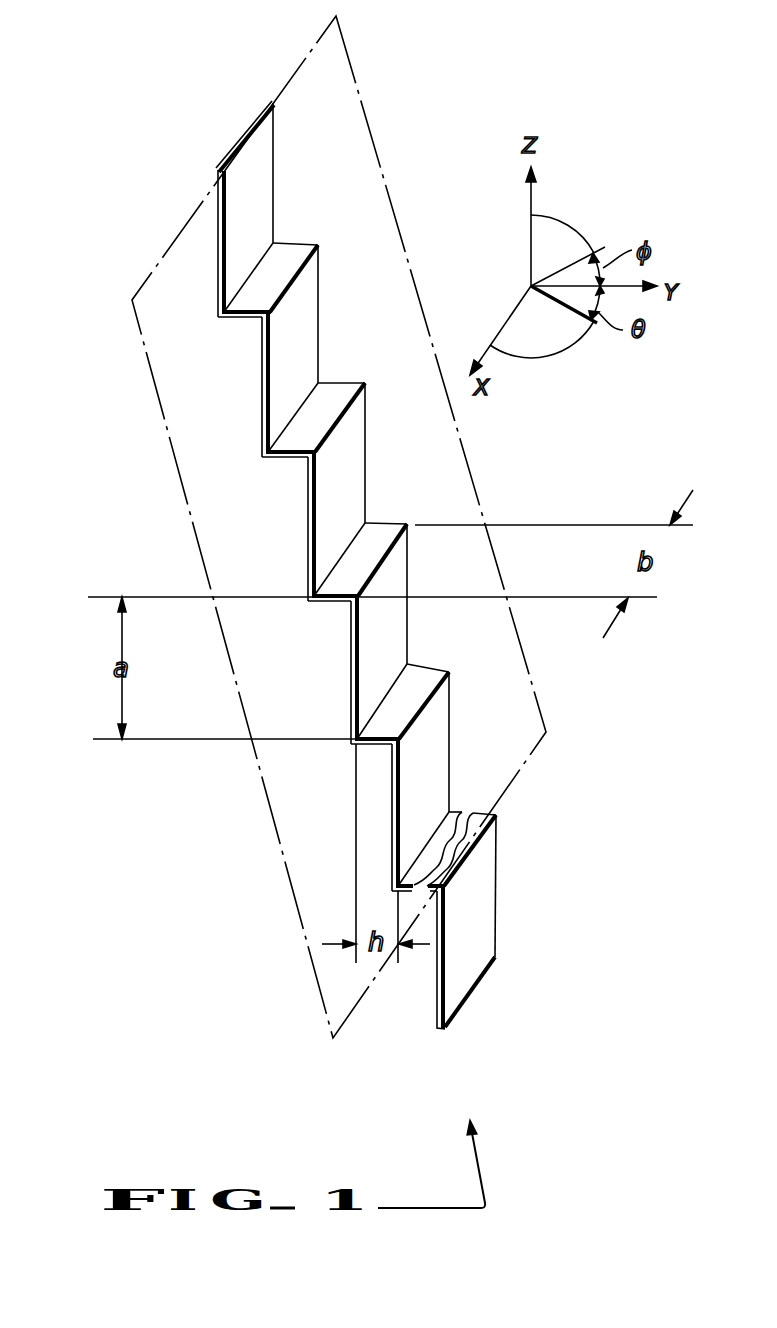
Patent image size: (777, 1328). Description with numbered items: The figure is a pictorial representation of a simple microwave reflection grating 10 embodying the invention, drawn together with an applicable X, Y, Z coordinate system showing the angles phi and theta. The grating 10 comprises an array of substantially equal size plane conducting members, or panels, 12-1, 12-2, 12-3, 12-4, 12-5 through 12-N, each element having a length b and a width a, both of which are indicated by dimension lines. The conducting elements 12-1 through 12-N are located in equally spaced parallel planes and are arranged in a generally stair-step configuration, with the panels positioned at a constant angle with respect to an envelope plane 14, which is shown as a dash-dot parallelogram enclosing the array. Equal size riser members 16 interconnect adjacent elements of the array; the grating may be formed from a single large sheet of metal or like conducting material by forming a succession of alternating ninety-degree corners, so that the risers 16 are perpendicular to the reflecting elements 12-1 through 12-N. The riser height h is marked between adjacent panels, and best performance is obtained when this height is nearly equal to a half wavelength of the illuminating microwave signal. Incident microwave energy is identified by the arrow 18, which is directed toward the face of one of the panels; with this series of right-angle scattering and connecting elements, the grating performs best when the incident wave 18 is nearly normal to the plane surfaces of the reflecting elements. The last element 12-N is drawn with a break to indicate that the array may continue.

The grating 10 is at (116, 210).
The plane conducting member 12-1 is at (265, 172).
The plane conducting member 12-2 is at (307, 305).
The plane conducting member 12-3 is at (358, 438).
The plane conducting member 12-4 is at (397, 567).
The plane conducting member 12-5 is at (442, 725).
The plane conducting member 12-N is at (485, 852).
The envelope plane 14 is at (352, 62).
The riser member 16 is at (245, 309).
The incident microwave energy 18 is at (390, 635).